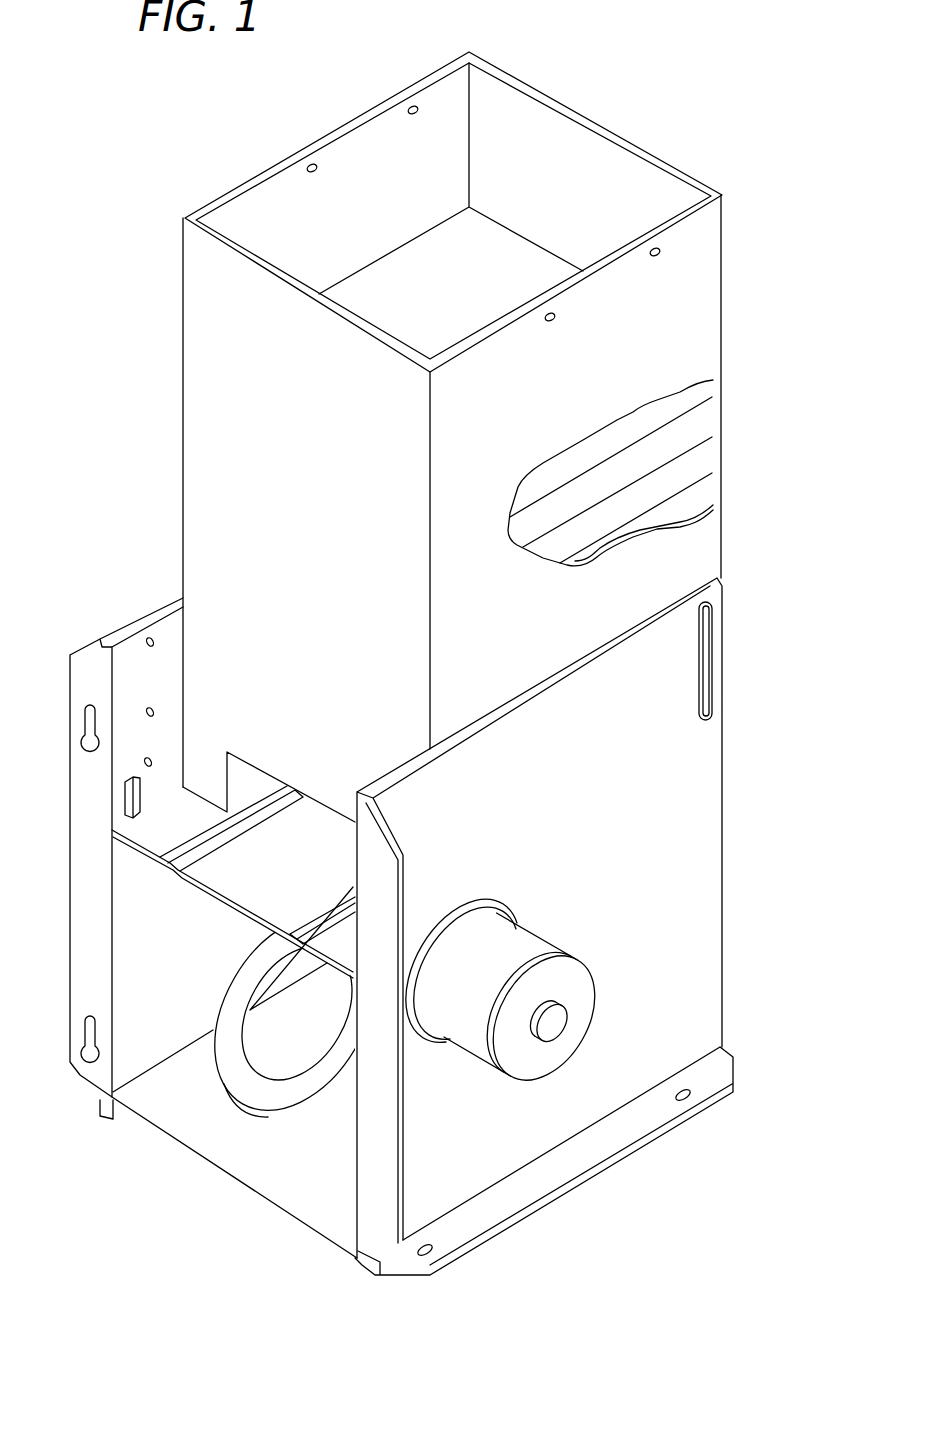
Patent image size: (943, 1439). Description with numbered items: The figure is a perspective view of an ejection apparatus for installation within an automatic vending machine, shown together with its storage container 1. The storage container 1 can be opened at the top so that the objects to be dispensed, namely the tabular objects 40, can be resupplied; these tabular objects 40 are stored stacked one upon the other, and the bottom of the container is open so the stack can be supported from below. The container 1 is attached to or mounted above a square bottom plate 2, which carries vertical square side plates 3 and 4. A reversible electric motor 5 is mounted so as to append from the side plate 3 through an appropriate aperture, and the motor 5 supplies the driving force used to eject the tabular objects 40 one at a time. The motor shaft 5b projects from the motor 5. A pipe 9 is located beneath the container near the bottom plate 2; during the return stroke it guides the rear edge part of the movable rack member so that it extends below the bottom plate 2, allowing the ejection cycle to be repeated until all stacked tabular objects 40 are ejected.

The storage container 1 is at (598, 157).
The bottom plate 2 is at (146, 834).
The side plate 3 is at (684, 770).
The side plate 4 is at (137, 652).
The reversible electric motor 5 is at (481, 1030).
The motor shaft 5b is at (558, 1025).
The pipe 9 is at (247, 1100).
The tabular objects 40 is at (704, 456).